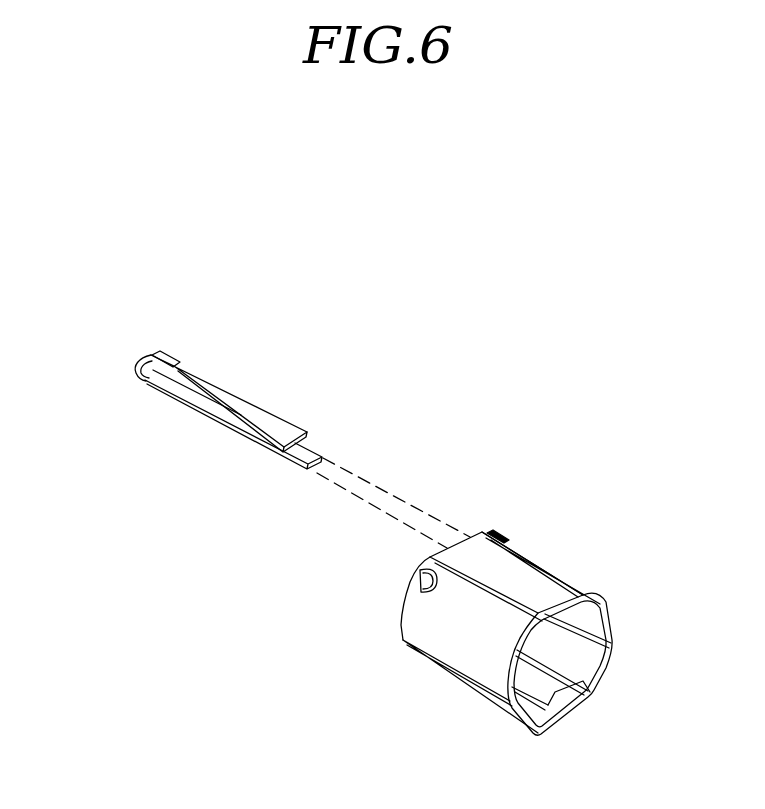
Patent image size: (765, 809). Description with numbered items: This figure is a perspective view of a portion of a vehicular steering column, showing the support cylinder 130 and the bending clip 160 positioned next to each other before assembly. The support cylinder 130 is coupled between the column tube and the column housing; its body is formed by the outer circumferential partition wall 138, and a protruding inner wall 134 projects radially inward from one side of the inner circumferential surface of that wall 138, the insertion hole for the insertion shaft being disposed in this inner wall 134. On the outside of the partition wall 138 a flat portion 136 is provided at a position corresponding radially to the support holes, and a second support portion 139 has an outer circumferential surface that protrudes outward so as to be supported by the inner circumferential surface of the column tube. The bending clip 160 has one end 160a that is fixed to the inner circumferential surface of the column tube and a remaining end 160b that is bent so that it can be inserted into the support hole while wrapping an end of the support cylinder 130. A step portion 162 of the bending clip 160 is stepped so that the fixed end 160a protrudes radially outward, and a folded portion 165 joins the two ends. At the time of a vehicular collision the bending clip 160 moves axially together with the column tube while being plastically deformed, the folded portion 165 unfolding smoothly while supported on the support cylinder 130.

The support cylinder 130 is at (487, 585).
The protruding inner wall 134 is at (557, 690).
The flat portion 136 is at (550, 592).
The outer circumferential partition wall 138 is at (470, 648).
The second support portion 139 is at (496, 535).
The bending clip 160 is at (205, 411).
The one end of the bending clip 160a is at (273, 428).
The remaining end of the bending clip 160b is at (192, 429).
The step portion 162 is at (170, 363).
The folded portion 165 is at (140, 360).